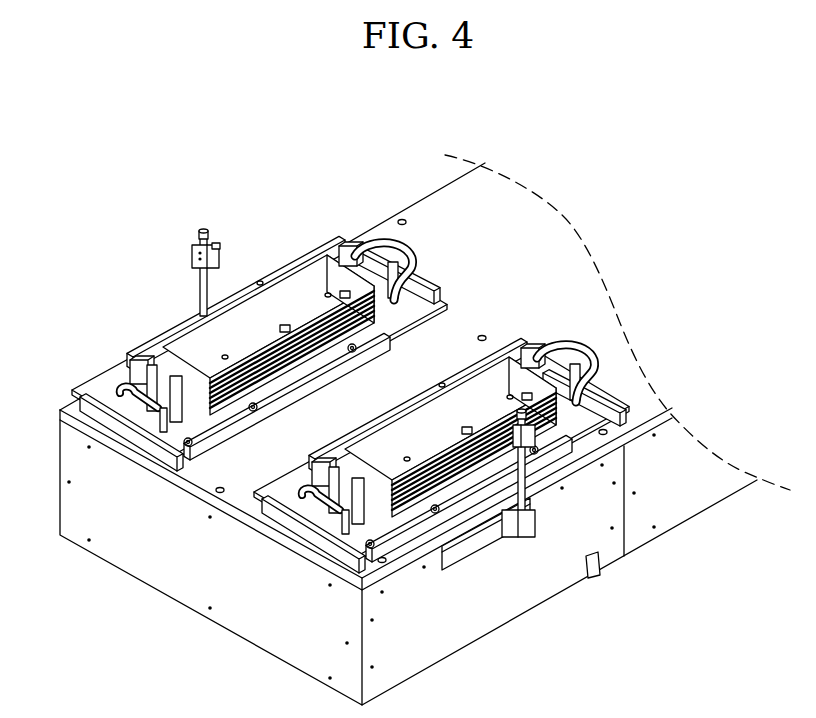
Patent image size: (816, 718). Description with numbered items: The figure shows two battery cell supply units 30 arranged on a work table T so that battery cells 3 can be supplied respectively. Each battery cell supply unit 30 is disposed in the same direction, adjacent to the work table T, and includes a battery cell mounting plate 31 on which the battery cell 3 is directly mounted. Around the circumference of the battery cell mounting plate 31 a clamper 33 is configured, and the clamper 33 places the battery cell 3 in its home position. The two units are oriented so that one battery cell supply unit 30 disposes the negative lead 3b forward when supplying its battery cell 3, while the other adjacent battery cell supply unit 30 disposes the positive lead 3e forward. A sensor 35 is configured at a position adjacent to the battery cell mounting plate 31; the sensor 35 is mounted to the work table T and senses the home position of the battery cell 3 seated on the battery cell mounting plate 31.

The battery cell 3 is at (281, 302).
The negative lead 3b is at (157, 352).
The positive lead 3e is at (360, 257).
The battery cell supply unit 30 is at (297, 257).
The battery cell mounting plate 31 is at (207, 430).
The clamper 33 is at (148, 383).
The sensor 35 is at (196, 247).
The work table T is at (552, 570).